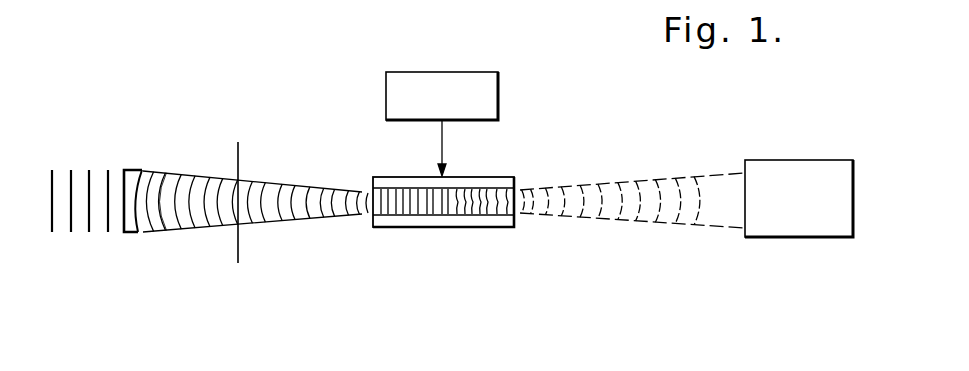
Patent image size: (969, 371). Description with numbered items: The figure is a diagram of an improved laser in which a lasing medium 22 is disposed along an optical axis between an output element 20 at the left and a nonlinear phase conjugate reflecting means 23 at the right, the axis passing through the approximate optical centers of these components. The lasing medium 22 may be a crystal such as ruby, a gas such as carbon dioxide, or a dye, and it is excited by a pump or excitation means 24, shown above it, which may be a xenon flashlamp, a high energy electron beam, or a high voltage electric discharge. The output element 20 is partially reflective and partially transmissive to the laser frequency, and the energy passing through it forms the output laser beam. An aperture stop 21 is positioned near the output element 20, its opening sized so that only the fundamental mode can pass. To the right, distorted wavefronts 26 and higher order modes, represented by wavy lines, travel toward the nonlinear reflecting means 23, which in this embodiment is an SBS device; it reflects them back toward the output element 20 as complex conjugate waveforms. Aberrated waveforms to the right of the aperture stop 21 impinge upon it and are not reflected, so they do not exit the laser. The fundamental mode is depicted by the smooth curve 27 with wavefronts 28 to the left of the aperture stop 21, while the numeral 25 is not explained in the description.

The output element 20 is at (139, 231).
The aperture stop 21 is at (238, 258).
The lasing medium 22 is at (514, 228).
The nonlinear phase conjugate reflecting means 23 is at (854, 239).
The pump or excitation means 24 is at (498, 72).
The phase conjugate wavefront 25 is at (540, 190).
The distorted wavefronts 26 is at (698, 203).
The smooth curve 27 is at (162, 169).
The wavefronts 28 is at (165, 213).